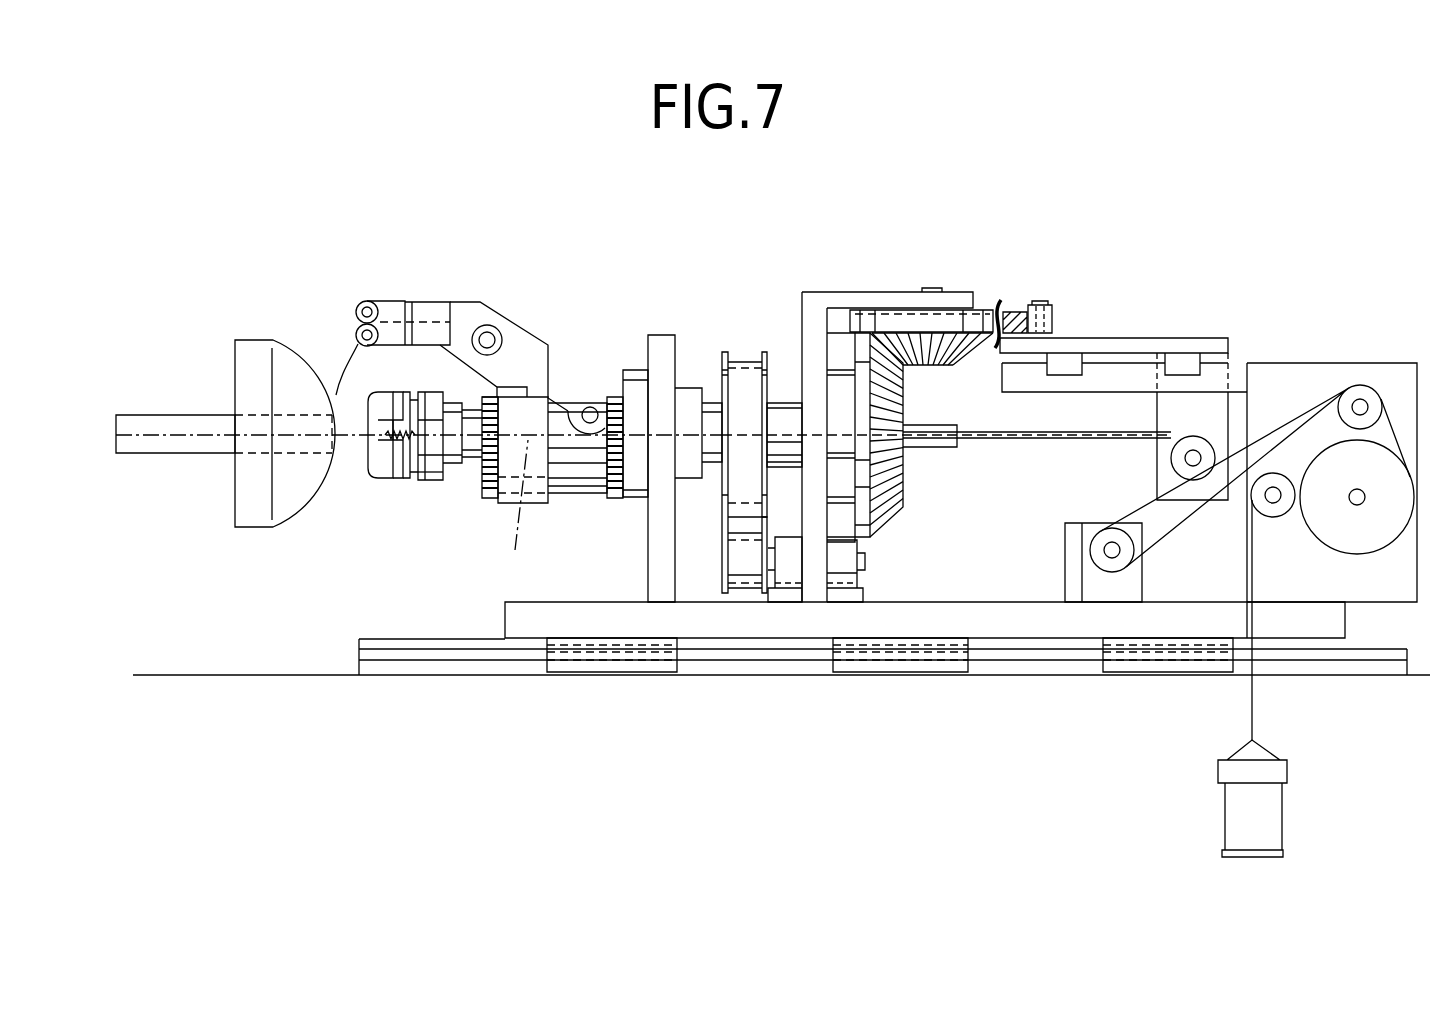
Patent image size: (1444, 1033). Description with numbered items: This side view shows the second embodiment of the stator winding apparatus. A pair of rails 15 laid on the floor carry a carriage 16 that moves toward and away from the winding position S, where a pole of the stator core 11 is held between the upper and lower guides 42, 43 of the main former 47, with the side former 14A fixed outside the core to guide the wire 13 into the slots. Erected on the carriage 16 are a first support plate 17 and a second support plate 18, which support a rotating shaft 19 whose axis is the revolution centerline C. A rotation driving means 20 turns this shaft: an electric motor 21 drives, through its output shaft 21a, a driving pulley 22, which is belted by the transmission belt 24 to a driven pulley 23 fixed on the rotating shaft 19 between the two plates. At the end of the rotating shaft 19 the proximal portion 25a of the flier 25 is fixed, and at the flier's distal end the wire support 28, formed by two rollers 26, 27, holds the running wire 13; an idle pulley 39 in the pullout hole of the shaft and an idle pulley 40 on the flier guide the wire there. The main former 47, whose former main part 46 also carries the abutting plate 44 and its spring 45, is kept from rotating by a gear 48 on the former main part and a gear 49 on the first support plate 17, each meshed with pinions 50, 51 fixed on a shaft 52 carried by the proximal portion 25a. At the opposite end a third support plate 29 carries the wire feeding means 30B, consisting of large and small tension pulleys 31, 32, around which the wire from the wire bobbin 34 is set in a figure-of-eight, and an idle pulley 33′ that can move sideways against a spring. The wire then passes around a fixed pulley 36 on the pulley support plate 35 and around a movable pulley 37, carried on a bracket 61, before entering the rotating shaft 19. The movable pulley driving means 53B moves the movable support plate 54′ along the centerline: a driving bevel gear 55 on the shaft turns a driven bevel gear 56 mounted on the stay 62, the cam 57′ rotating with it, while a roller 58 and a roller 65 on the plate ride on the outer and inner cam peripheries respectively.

The stator core 11 is at (188, 423).
The side former 14A is at (258, 513).
The winding position S is at (339, 448).
The roller 26 is at (357, 308).
The roller 27 is at (372, 345).
The wire support 28 is at (362, 299).
The flier 25 is at (542, 350).
The idle pulley 40 is at (487, 325).
The gear 48 is at (494, 390).
The idle pulley 39 is at (592, 405).
The upper guide 42 is at (377, 404).
The lower guide 43 is at (382, 467).
The abutting plate 44 is at (370, 445).
The spring 45 is at (410, 477).
The former main part 46 is at (450, 407).
The main former 47 is at (429, 486).
The pinion 50 is at (485, 498).
The proximal portion 25a is at (535, 503).
The revolution centerline C is at (515, 503).
The shaft 52 is at (585, 493).
The pinion 51 is at (615, 498).
The gear 49 is at (618, 437).
The first support plate 17 is at (648, 557).
The driven pulley 23 is at (668, 368).
The rotation driving means 20 is at (714, 360).
The pulley 24 is at (748, 375).
The driving pulley 22 is at (720, 572).
The rotating shaft 19 is at (787, 417).
The output shaft 21a is at (773, 560).
The second support plate 18 is at (818, 550).
The electric motor 21 is at (843, 574).
The driving bevel gear 55 is at (890, 500).
The cam 57′ is at (903, 318).
The driven bevel gear 56 is at (938, 352).
The stay 62 is at (952, 296).
The movable pulley driving means 53B is at (988, 300).
The roller 65 is at (1012, 313).
The roller 58 is at (1058, 320).
The movable support plate 54′ is at (1197, 343).
The bracket 61 is at (1147, 373).
The movable pulley 37 is at (1171, 466).
The wire 13 is at (1052, 439).
The third support plate 29 is at (1395, 373).
The idle pulley 33′ is at (1352, 393).
The tension pulley 32 is at (1273, 517).
The tension pulley 31 is at (1335, 532).
The wire feeding means 30B is at (1366, 554).
The fixed pulley 36 is at (1097, 543).
The pulley support plate 35 is at (1072, 567).
The wire bobbin 34 is at (1278, 772).
The carriage 16 is at (963, 617).
The rail 15 is at (1045, 657).